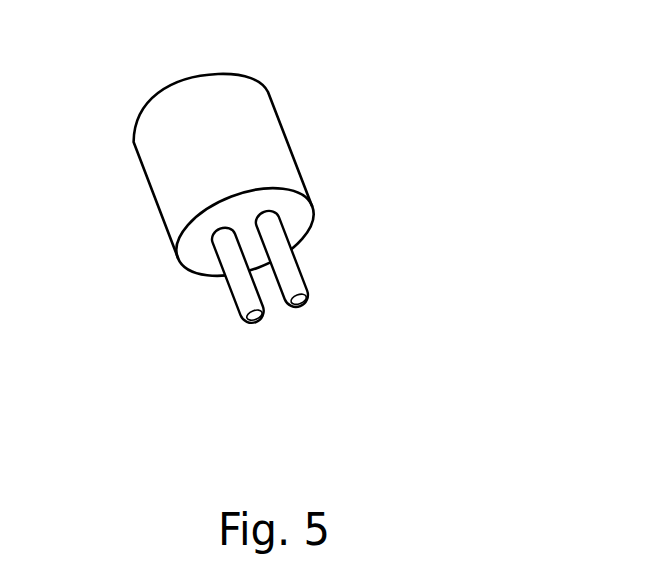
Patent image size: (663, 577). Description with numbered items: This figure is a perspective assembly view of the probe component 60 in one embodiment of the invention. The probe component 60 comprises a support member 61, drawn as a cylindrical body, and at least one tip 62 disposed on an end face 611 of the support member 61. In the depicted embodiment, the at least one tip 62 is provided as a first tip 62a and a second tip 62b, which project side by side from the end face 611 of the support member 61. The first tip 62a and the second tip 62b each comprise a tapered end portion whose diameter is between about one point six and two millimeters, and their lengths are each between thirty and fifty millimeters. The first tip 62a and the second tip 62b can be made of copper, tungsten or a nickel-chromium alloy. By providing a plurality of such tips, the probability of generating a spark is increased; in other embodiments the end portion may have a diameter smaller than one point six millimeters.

The probe component 60 is at (288, 100).
The support member 61 is at (285, 165).
The end face 611 is at (193, 253).
The tip 62 is at (360, 423).
The first tip 62a is at (250, 328).
The second tip 62b is at (307, 316).